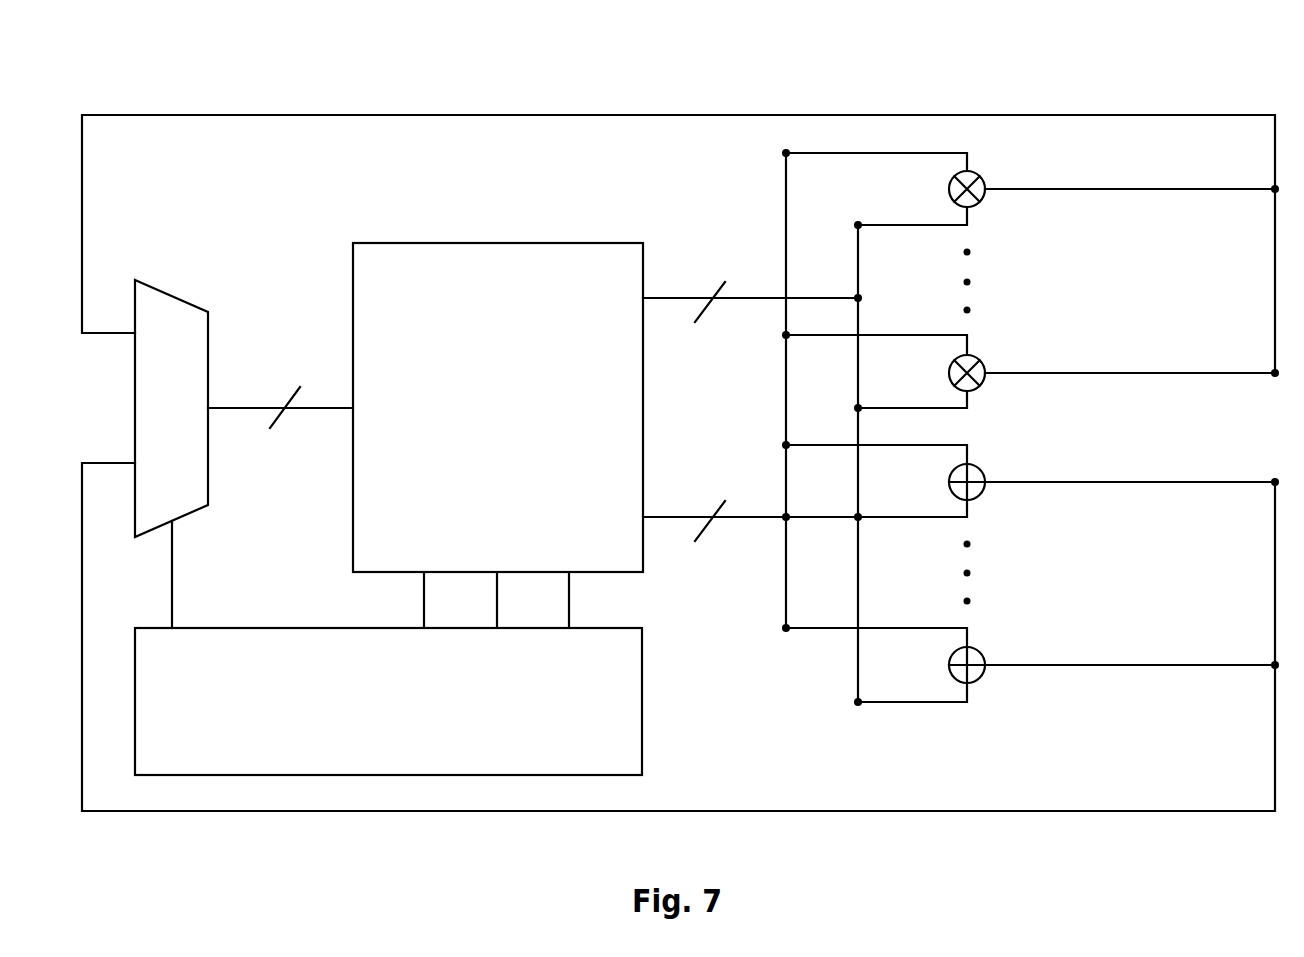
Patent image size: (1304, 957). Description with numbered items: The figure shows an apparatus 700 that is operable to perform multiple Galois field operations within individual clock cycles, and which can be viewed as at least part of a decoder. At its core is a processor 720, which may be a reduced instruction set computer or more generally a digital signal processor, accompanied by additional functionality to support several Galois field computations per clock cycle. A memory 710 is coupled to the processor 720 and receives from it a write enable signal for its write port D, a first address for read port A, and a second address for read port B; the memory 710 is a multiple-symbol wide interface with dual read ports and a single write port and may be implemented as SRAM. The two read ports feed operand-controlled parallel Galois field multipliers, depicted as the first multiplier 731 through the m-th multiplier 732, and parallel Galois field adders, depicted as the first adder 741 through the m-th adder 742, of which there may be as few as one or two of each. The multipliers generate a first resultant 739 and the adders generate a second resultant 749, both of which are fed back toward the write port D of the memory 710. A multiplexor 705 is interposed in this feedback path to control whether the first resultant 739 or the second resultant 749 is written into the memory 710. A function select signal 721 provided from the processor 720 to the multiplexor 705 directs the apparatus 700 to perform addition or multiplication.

The apparatus 700 is at (1050, 52).
The multiplexor (MUX) 705 is at (190, 433).
The memory 710 is at (515, 448).
The processor 720 is at (183, 730).
The function select signal 721 is at (172, 572).
The multiplier 1 731 is at (979, 203).
The multiplier m 732 is at (979, 359).
The first resultant 739 is at (661, 115).
The adder 1 741 is at (979, 468).
The adder m 742 is at (979, 652).
The second resultant 749 is at (713, 811).